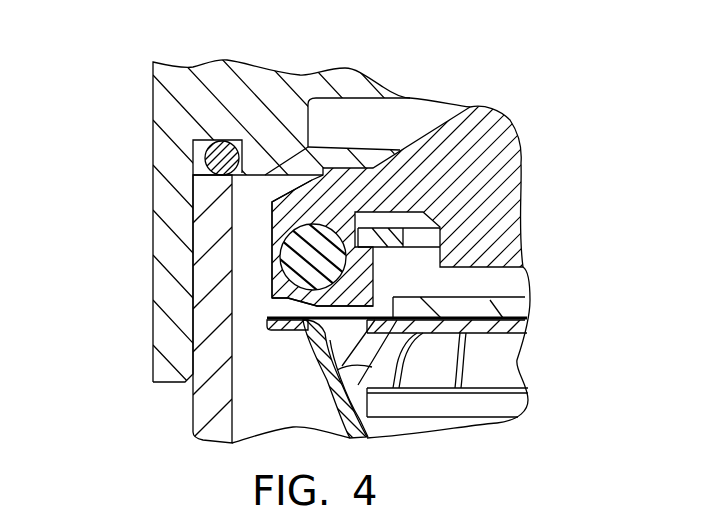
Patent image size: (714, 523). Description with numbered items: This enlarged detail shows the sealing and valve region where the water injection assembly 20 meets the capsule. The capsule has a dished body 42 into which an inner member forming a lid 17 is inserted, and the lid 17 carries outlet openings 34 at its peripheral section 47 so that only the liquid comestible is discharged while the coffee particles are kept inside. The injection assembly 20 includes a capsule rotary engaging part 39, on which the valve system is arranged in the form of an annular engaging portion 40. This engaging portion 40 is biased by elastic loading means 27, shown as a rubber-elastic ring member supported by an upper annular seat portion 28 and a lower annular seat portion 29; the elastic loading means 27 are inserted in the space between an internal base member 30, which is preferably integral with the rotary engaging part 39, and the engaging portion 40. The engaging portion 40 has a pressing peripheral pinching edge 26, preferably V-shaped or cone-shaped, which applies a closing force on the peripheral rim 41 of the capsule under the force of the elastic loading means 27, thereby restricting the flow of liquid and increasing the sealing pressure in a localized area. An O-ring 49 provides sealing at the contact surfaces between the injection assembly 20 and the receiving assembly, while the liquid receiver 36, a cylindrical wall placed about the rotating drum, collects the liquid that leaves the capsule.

The water injection assembly 20 is at (107, 65).
The lower annular seat portion 29 is at (285, 231).
The elastic loading means 27 is at (283, 260).
The upper annular seat portion 28 is at (292, 296).
The annular engaging portion 40 is at (302, 304).
The pressing peripheral pinching edge 26 is at (292, 311).
The O-ring 49 is at (222, 140).
The internal base member 30 is at (307, 200).
The liquid receiver 36 is at (207, 415).
The capsule rotary engaging part 39 is at (513, 164).
The peripheral rim 41 is at (277, 332).
The peripheral section 47 is at (328, 372).
The body 42 is at (375, 437).
The outlet openings 34 is at (488, 419).
The lid 17 is at (512, 363).